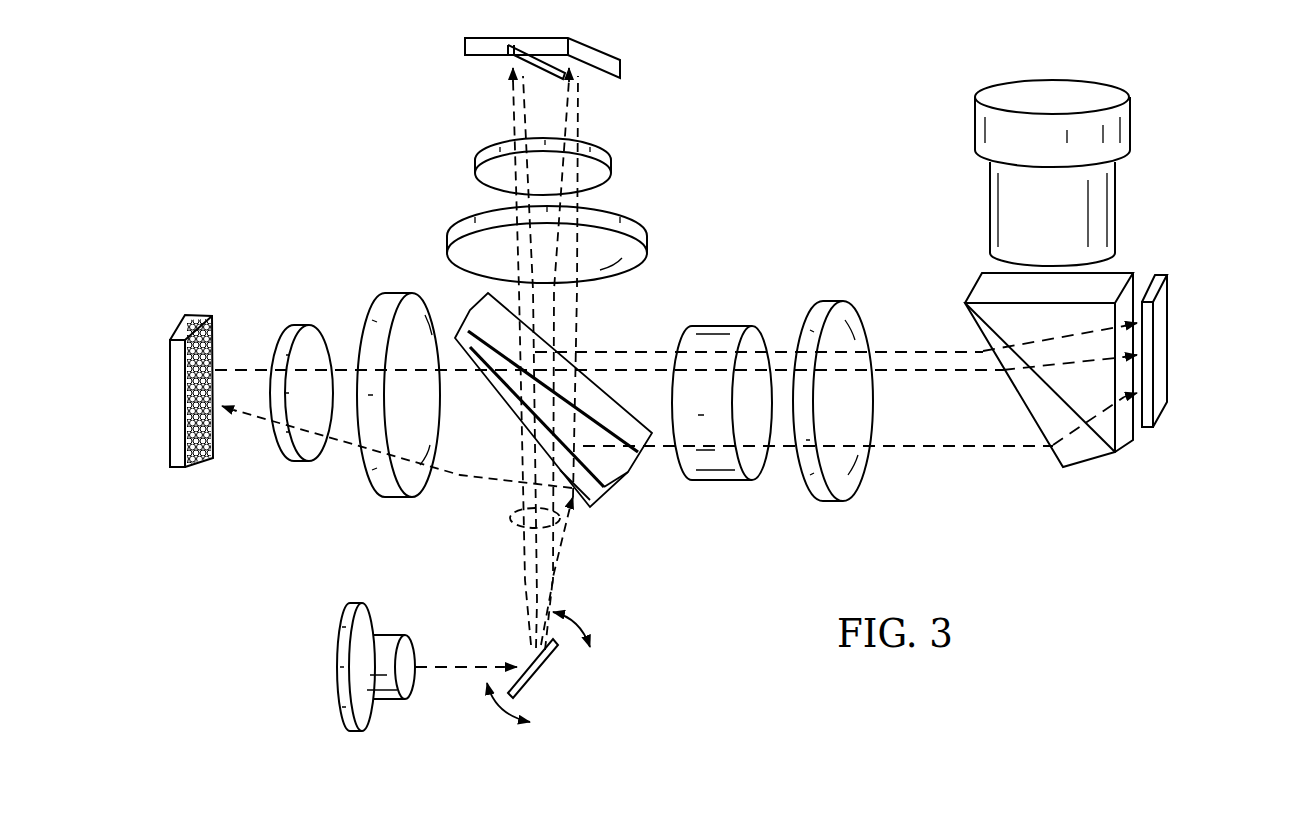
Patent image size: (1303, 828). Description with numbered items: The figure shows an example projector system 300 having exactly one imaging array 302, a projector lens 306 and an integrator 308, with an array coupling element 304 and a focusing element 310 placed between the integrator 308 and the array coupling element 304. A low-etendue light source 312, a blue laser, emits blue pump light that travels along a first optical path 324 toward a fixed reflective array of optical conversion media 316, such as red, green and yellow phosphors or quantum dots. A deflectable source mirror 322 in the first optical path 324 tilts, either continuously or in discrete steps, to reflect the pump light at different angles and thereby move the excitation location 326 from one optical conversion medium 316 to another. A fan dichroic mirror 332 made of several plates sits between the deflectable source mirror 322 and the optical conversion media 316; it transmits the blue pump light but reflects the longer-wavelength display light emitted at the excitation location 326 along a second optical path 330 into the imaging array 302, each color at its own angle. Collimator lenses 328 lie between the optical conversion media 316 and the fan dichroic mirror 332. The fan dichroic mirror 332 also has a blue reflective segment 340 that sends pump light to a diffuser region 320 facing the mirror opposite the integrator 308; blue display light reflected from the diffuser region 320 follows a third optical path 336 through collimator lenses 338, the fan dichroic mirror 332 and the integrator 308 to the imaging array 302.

The projector system 300 is at (283, 172).
The imaging array 302 is at (1170, 332).
The array coupling element 304 is at (1088, 461).
The projector lens 306 is at (1118, 204).
The integrator 308 is at (722, 481).
The focusing element 310 is at (833, 503).
The low-etendue light source 312 is at (336, 669).
The optical conversion media 316 is at (463, 53).
The diffuser region 320 is at (212, 463).
The deflectable source mirror 322 is at (534, 678).
The first optical path 324 is at (509, 519).
The excitation location 326 is at (496, 71).
The collimator lenses 328 is at (474, 166).
The second optical path 330 is at (935, 347).
The fan dichroic mirror 332 is at (614, 488).
The third optical path 336 is at (937, 378).
The collimator lenses 338 is at (300, 463).
The blue reflective segment 340 is at (586, 508).